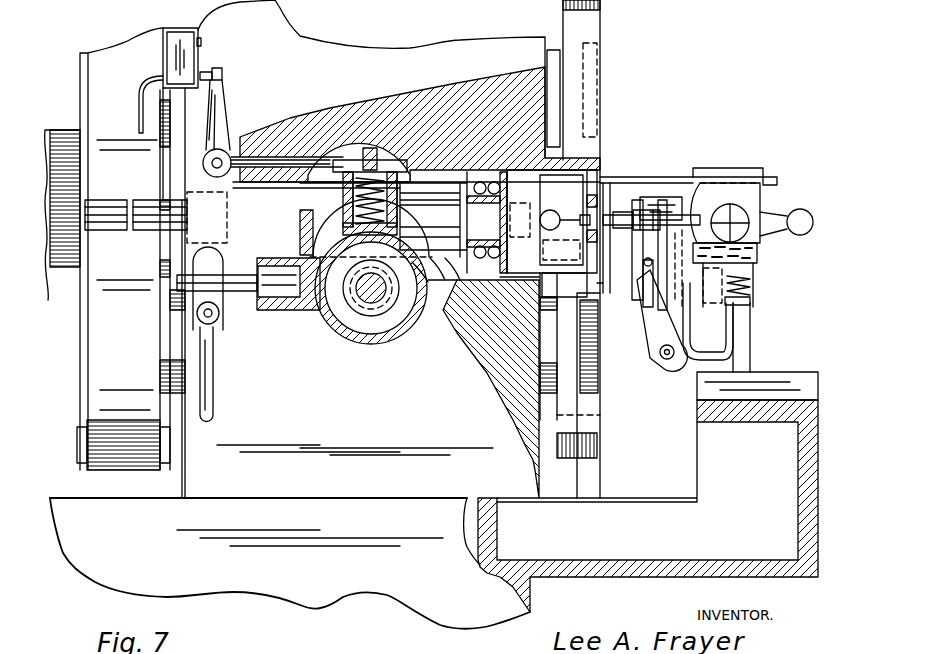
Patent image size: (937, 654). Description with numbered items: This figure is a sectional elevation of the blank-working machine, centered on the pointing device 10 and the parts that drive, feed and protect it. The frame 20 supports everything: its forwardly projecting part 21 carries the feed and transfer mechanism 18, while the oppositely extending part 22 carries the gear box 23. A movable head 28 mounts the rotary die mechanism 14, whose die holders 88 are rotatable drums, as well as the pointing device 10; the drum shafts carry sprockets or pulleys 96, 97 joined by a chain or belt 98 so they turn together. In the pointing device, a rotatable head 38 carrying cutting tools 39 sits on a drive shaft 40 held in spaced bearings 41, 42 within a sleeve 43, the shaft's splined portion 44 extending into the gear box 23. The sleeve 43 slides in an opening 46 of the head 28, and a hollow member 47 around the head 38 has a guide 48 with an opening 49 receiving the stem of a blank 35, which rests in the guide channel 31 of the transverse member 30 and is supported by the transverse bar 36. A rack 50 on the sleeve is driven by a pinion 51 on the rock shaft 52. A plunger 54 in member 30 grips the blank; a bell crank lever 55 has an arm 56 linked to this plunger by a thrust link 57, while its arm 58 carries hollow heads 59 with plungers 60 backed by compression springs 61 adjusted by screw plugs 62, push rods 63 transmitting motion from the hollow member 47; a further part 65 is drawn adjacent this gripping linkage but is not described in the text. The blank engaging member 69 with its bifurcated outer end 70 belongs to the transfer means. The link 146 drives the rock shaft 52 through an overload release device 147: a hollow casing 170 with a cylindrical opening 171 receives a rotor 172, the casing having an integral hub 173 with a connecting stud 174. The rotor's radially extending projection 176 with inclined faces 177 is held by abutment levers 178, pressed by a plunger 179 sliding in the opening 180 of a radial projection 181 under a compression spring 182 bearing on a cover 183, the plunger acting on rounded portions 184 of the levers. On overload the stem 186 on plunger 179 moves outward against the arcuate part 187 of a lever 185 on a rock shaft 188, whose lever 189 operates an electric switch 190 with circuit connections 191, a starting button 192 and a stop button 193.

The die mechanism 10 is at (600, 88).
The rotary die mechanism 14 is at (603, 53).
The feed and transfer mechanism 18 is at (771, 172).
The frame 20 is at (588, 582).
The forwardly projecting part 21 is at (750, 405).
The oppositely extending part 22 is at (75, 510).
The gear box 23 is at (52, 131).
The movable head 28 is at (290, 22).
The transversely extending member 30 is at (650, 200).
The guide channel 31 is at (697, 213).
The blank 35 is at (610, 220).
The transverse bar 36 is at (643, 288).
The rotatable head 38 is at (600, 133).
The cutting tools 39 is at (580, 216).
The drive shaft 40 is at (444, 285).
The bearing 41 is at (163, 240).
The bearing 42 is at (528, 180).
The sleeve 43 is at (497, 175).
The splined portion 44 is at (113, 226).
The opening 46 is at (443, 308).
The hollow member 47 is at (600, 220).
The guide 48 is at (607, 220).
The opening 49 is at (588, 223).
The rack 50 is at (418, 308).
The pinion 51 is at (393, 340).
The rock shaft 52 is at (348, 322).
The plunger 54 is at (598, 285).
The bell crank lever 55 is at (727, 348).
The arm 56 is at (645, 327).
The thrust link 57 is at (637, 310).
The arm 58 is at (713, 313).
The hollow heads 59 is at (755, 289).
The plungers 60 is at (755, 210).
The compression springs 61 is at (727, 281).
The screw plugs 62 is at (752, 258).
The push rods 63 is at (717, 213).
The stop 65 is at (738, 300).
The blank engaging member 69 is at (633, 217).
The bifurcated outer end 70 is at (612, 213).
The die holders 88 is at (600, 34).
The sprocket or pulley 96 is at (82, 385).
The sprocket or pulley 97 is at (86, 93).
The chain or belt 98 is at (90, 326).
The link 146 is at (212, 370).
The overload release device 147 is at (318, 312).
The hollow casing 170 is at (368, 305).
The cylindrical opening 171 is at (387, 312).
The rotor 172 is at (337, 313).
The integral hub 173 is at (280, 298).
The connecting stud or pin 174 is at (243, 290).
The radially extending projection 176 is at (443, 272).
The inclined faces 177 is at (341, 242).
The abutment levers 178 is at (303, 243).
The plunger 179 is at (330, 165).
The opening 180 is at (358, 160).
The radial projection 181 is at (457, 190).
The compression spring 182 is at (368, 158).
The cover 183 is at (398, 150).
The rounded portions 184 is at (428, 224).
The lever 185 is at (285, 160).
The stem 186 is at (393, 150).
The arcuate part 187 is at (402, 158).
The rock shaft 188 is at (233, 157).
The lever 189 is at (230, 92).
The electric switch 190 is at (187, 52).
The circuit connections 191 is at (142, 128).
The starting or setting button 192 is at (200, 40).
The trip or stop button 193 is at (222, 75).